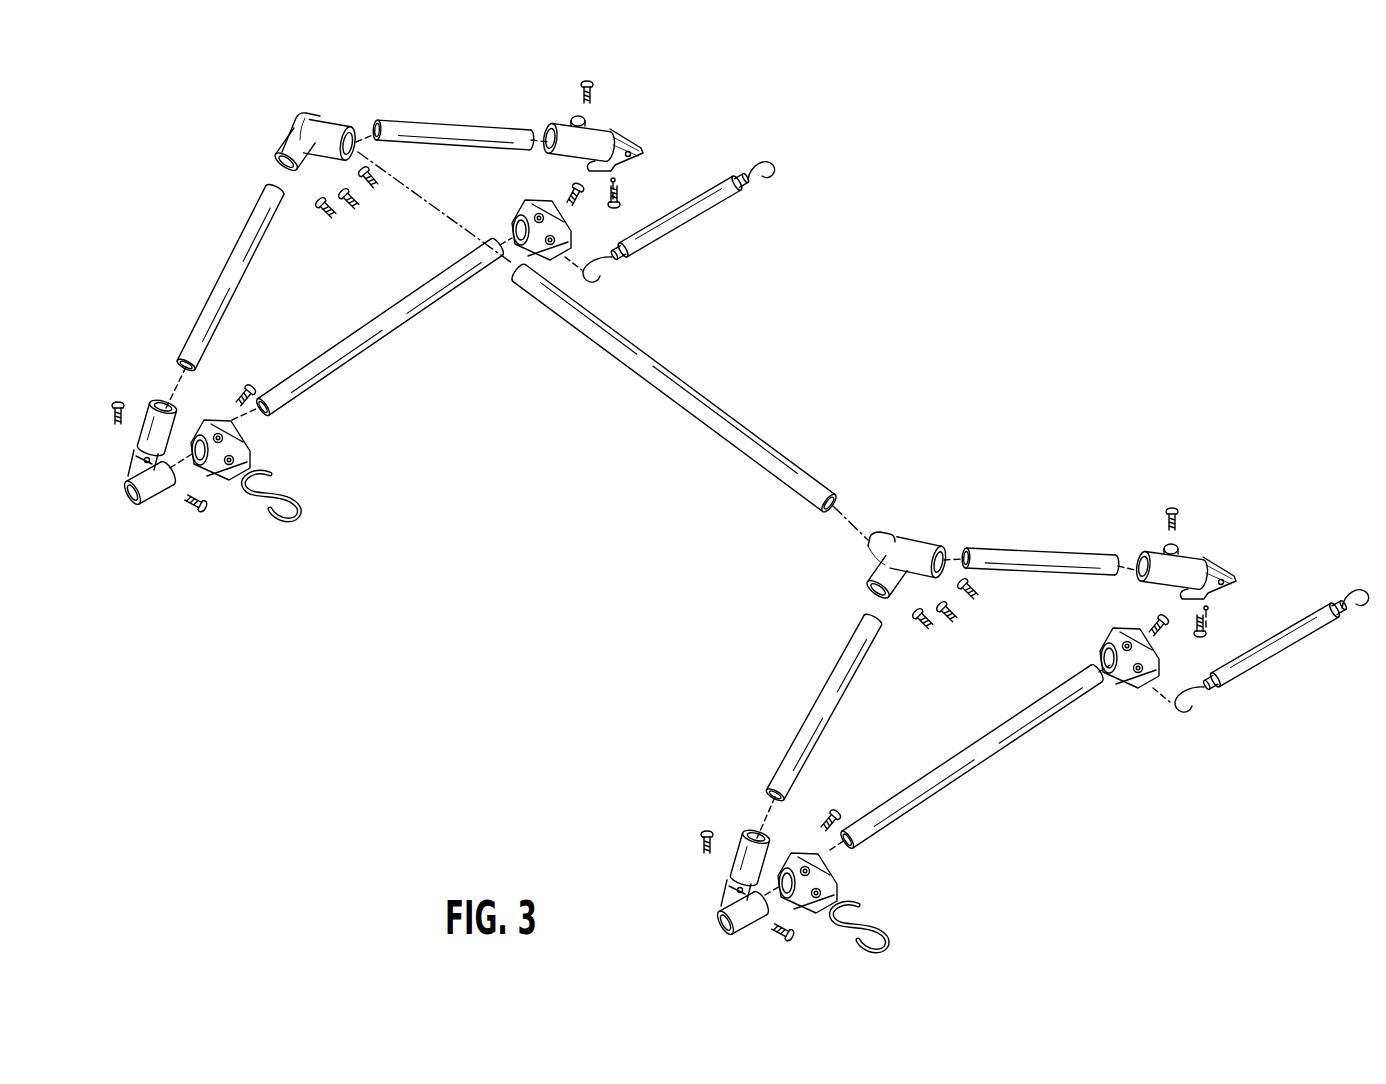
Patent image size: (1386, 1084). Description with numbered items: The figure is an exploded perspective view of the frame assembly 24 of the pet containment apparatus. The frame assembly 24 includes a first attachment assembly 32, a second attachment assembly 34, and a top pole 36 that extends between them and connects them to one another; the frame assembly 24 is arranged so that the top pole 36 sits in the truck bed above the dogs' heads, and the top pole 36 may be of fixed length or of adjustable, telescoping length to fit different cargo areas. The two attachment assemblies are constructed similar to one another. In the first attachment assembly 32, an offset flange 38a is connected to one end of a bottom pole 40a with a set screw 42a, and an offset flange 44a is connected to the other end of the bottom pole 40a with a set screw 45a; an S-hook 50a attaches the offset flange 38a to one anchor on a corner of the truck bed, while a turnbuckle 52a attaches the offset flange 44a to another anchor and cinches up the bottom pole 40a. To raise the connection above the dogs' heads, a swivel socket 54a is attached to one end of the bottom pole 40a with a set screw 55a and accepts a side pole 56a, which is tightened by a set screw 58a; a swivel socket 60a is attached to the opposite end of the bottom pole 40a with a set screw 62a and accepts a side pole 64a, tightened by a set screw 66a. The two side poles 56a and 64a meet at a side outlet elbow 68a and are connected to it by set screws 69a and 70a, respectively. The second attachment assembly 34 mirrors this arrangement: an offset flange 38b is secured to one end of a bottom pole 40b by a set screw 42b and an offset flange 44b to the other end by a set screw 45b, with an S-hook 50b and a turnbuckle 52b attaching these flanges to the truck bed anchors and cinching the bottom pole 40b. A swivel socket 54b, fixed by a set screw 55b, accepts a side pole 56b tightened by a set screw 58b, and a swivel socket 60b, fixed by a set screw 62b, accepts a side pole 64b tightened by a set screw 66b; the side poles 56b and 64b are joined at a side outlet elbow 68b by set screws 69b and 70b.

The frame assembly 24 is at (940, 187).
The first attachment assembly 32 is at (972, 533).
The second attachment assembly 34 is at (381, 102).
The top pole 36 is at (738, 428).
The offset flange 38a is at (845, 888).
The offset flange 38b is at (255, 447).
The bottom pole 40a is at (960, 770).
The bottom pole 40b is at (370, 350).
The set screw 42a is at (833, 812).
The set screw 42b is at (248, 382).
The offset flange 44a is at (1115, 690).
The offset flange 44b is at (528, 210).
The set screw 45a is at (1152, 625).
The set screw 45b is at (573, 198).
The S-hook 50a is at (880, 925).
The S-hook 50b is at (292, 504).
The turnbuckle 52a is at (1240, 675).
The turnbuckle 52b is at (693, 218).
The swivel socket 54a is at (735, 905).
The swivel socket 54b is at (132, 470).
The set screw 55a is at (782, 938).
The set screw 55b is at (196, 510).
The side pole 56a is at (812, 695).
The side pole 56b is at (240, 242).
The set screw 58a is at (700, 838).
The set screw 58b is at (110, 410).
The swivel socket 60a is at (1208, 565).
The swivel socket 60b is at (607, 140).
The set screw 62a is at (1208, 630).
The set screw 62b is at (619, 199).
The side pole 64a is at (1025, 555).
The side pole 64b is at (487, 132).
The set screw 66a is at (1163, 525).
The set screw 66b is at (577, 84).
The side outlet elbow 68a is at (905, 545).
The side outlet elbow 68b is at (300, 112).
The set screw 69a is at (928, 632).
The set screw 69b is at (329, 212).
The set screw 70a is at (978, 598).
The set screw 70b is at (368, 186).